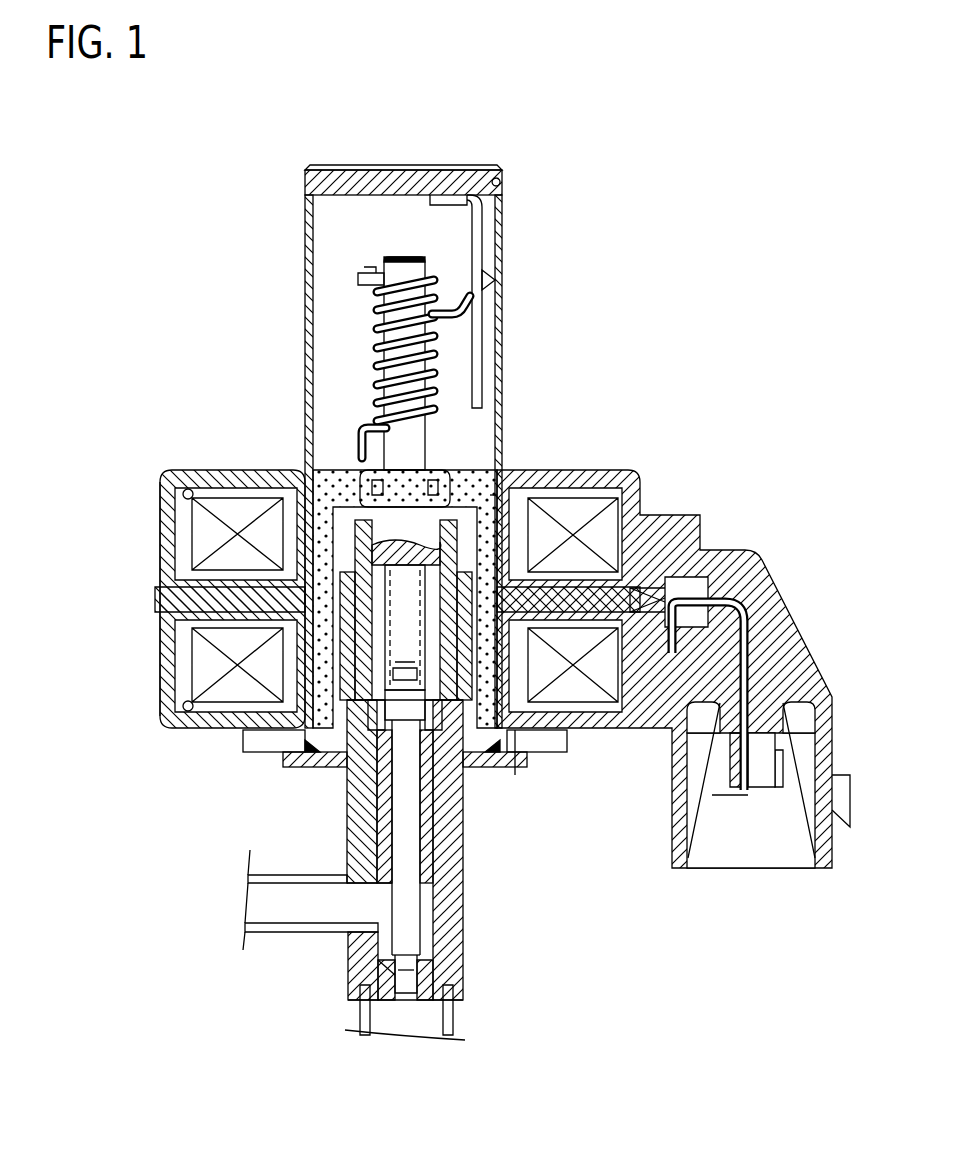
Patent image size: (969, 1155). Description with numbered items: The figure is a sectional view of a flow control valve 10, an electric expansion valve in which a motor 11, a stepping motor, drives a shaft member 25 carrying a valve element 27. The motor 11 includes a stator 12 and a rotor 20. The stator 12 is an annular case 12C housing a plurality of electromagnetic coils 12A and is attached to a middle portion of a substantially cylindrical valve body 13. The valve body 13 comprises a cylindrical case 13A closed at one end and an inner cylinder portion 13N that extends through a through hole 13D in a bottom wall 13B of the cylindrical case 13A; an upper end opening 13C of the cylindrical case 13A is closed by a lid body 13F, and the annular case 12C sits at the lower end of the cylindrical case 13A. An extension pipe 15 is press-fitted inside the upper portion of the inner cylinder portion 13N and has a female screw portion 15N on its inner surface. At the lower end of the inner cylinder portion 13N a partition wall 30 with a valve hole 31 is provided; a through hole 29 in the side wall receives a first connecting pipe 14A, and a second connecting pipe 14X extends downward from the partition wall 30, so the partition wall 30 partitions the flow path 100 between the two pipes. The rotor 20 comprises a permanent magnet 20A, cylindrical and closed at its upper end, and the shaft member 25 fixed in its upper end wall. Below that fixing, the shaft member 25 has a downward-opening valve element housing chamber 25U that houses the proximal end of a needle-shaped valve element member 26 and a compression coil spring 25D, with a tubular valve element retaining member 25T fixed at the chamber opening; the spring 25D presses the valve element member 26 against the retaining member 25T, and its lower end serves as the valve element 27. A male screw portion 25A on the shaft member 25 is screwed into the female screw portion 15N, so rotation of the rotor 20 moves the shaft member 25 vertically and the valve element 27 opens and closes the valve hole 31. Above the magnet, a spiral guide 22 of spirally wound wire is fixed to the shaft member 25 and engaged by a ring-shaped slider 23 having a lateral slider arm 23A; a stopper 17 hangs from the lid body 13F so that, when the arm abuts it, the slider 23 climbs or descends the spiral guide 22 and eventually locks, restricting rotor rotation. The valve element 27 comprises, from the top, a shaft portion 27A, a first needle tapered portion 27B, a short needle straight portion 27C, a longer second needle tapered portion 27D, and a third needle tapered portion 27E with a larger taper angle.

The flow control valve 10 is at (586, 127).
The motor 11 is at (479, 446).
The stator 12 is at (312, 500).
The electromagnetic coils 12A is at (165, 562).
The annular case 12C is at (203, 545).
The valve body 13 is at (305, 340).
The cylindrical case 13A is at (502, 320).
The bottom wall 13B is at (450, 770).
The upper end opening 13C is at (503, 182).
The through hole 13D is at (470, 800).
The lid body 13F is at (362, 185).
The inner cylinder portion 13N is at (515, 758).
The first connecting pipe 14A is at (285, 878).
The second connecting pipe 14X is at (462, 1048).
The extension pipe 15 is at (447, 545).
The female screw portion 15N is at (365, 628).
The stopper 17 is at (480, 228).
The rotor 20 is at (482, 470).
The permanent magnet 20A is at (492, 498).
The spiral guide 22 is at (383, 335).
The slider 23 is at (440, 310).
The slider arm 23A is at (500, 282).
The shaft member 25 is at (392, 520).
The male screw portion 25A is at (365, 600).
The compression coil spring 25D is at (360, 652).
The valve element retaining member 25T is at (372, 708).
The valve element housing chamber 25U is at (490, 603).
The valve element member 26 is at (398, 778).
The valve element 27 is at (410, 945).
The shaft portion 27A is at (422, 952).
The first needle tapered portion 27B is at (425, 975).
The needle straight portion 27C is at (350, 968).
The second needle tapered portion 27D is at (372, 990).
The third needle tapered portion 27E is at (392, 1010).
The through hole 29 is at (345, 893).
The partition wall 30 is at (440, 993).
The valve hole 31 is at (452, 1022).
The flow path 100 is at (380, 905).